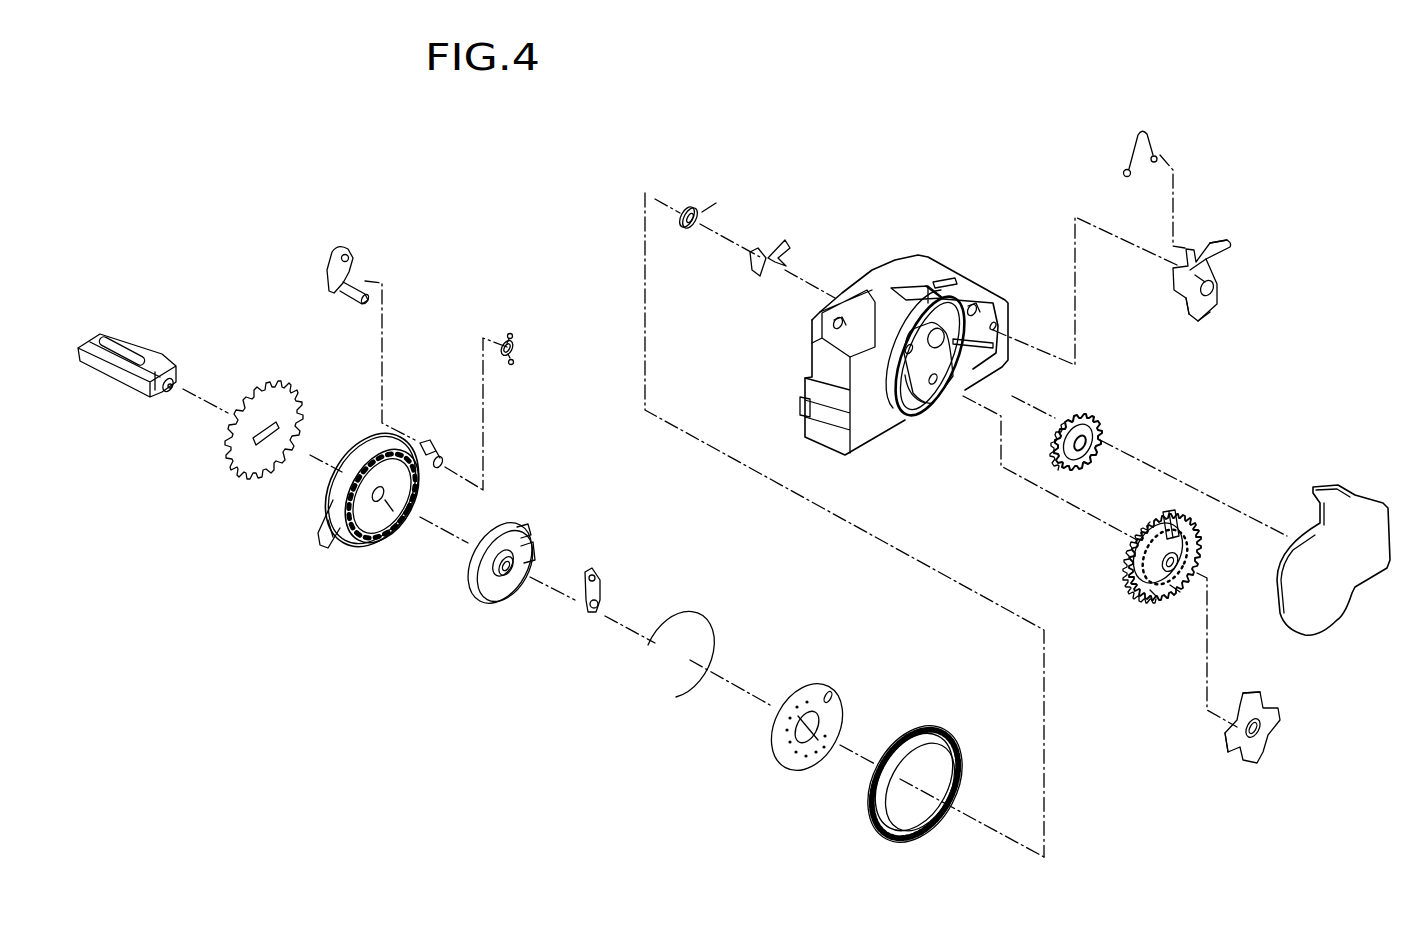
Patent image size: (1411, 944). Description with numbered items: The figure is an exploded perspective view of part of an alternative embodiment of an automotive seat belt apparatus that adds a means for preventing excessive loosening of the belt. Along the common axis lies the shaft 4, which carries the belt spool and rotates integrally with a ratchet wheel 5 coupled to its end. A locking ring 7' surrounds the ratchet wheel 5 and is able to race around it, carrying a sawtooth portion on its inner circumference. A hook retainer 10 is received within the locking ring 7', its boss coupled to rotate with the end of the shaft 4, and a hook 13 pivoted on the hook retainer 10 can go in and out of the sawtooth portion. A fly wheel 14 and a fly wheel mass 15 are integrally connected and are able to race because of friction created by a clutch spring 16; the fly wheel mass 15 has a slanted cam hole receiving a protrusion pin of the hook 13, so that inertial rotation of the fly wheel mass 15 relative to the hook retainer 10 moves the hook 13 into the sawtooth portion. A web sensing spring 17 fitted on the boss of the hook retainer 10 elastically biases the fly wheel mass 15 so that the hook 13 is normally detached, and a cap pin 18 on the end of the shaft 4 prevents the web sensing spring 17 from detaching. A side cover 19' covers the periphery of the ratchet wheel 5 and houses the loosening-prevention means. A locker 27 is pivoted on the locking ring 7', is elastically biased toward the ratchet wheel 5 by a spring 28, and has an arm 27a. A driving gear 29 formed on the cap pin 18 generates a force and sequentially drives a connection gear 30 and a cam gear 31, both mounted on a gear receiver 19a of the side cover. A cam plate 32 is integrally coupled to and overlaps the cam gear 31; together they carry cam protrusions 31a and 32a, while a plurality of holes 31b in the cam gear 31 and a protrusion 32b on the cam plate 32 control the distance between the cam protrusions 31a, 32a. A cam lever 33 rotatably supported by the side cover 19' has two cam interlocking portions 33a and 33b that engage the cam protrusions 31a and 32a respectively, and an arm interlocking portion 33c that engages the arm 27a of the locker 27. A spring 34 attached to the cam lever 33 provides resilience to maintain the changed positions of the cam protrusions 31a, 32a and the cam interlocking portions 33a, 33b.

The shaft 4 is at (122, 388).
The ratchet wheel 5 is at (225, 470).
The locking ring 7' is at (376, 529).
The hook retainer 10 is at (480, 598).
The hook 13 is at (585, 612).
The fly wheel 14 is at (890, 838).
The fly wheel mass 15 is at (770, 762).
The clutch spring 16 is at (650, 673).
The web sensing spring 17 is at (692, 198).
The cap pin 18 is at (748, 270).
The side cover 19' is at (904, 307).
The gear receiver 19a is at (944, 418).
The locker 27 is at (332, 250).
The arm 27a is at (352, 302).
The spring 28 is at (508, 334).
The driving gear 29 is at (790, 257).
The connection gear 30 is at (1063, 460).
The cam gear 31 is at (1133, 590).
The cam protrusion 31a is at (1175, 512).
The holes 31b is at (1175, 590).
The cam plate 32 is at (1258, 765).
The cam protrusion 32a is at (1252, 692).
The protrusion 32b is at (1230, 740).
The cam lever 33 is at (1222, 273).
The cam interlocking portion 33a is at (1215, 303).
The cam interlocking portion 33b is at (1186, 308).
The arm interlocking portion 33c is at (1228, 238).
The spring 34 is at (1121, 172).